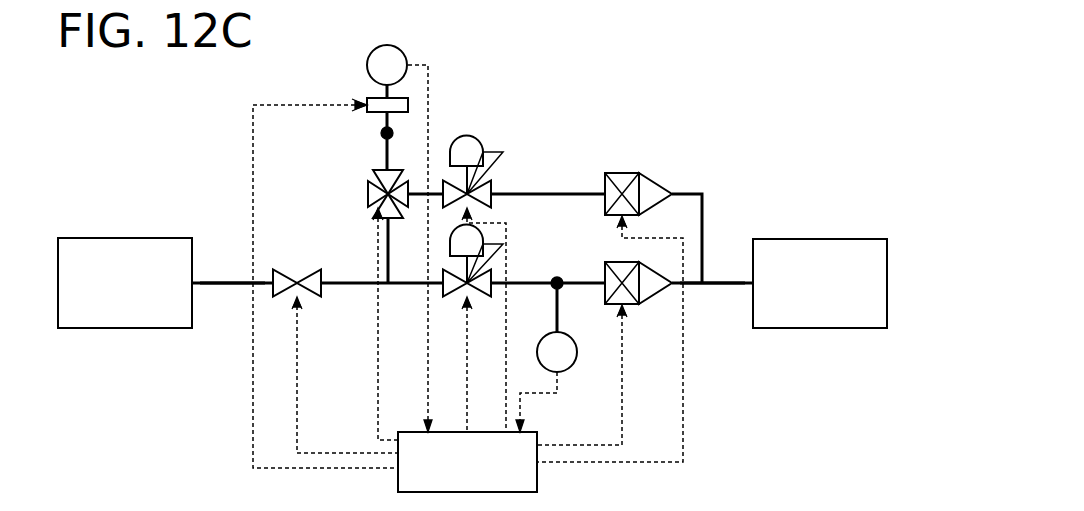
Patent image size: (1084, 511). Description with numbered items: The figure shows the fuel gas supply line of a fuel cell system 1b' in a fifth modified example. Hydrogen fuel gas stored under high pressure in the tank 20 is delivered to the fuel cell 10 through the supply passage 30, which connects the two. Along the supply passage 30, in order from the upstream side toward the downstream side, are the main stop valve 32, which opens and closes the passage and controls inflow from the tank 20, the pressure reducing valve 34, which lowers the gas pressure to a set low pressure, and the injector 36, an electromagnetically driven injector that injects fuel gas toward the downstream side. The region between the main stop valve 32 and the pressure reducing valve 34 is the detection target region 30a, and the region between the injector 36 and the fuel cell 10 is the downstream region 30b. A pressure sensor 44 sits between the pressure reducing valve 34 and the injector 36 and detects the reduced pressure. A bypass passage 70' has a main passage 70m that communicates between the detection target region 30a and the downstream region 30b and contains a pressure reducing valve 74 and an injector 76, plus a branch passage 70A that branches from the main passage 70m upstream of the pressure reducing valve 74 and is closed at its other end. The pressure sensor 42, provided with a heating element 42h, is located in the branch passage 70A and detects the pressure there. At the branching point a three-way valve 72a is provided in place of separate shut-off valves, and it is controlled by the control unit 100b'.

The tank 20 is at (113, 238).
The fuel cell 10 is at (852, 239).
The supply passage 30 is at (527, 292).
The detection target region 30a is at (347, 286).
The downstream region 30b is at (717, 286).
The main stop valve 32 is at (303, 269).
The pressure reducing valve 34 is at (458, 300).
The injector 36 is at (648, 305).
The pressure sensor 44 is at (571, 338).
The pressure sensor 42 is at (408, 58).
The heating element 42h is at (372, 98).
The branch passage 70A is at (385, 158).
The three-way valve 72a is at (368, 194).
The pressure reducing valve 74 is at (466, 136).
The injector 76 is at (625, 173).
The main passage 70m is at (517, 194).
The bypass passage 70' is at (702, 200).
The control unit 100b' is at (510, 448).
The fuel cell system 1b' is at (633, 114).